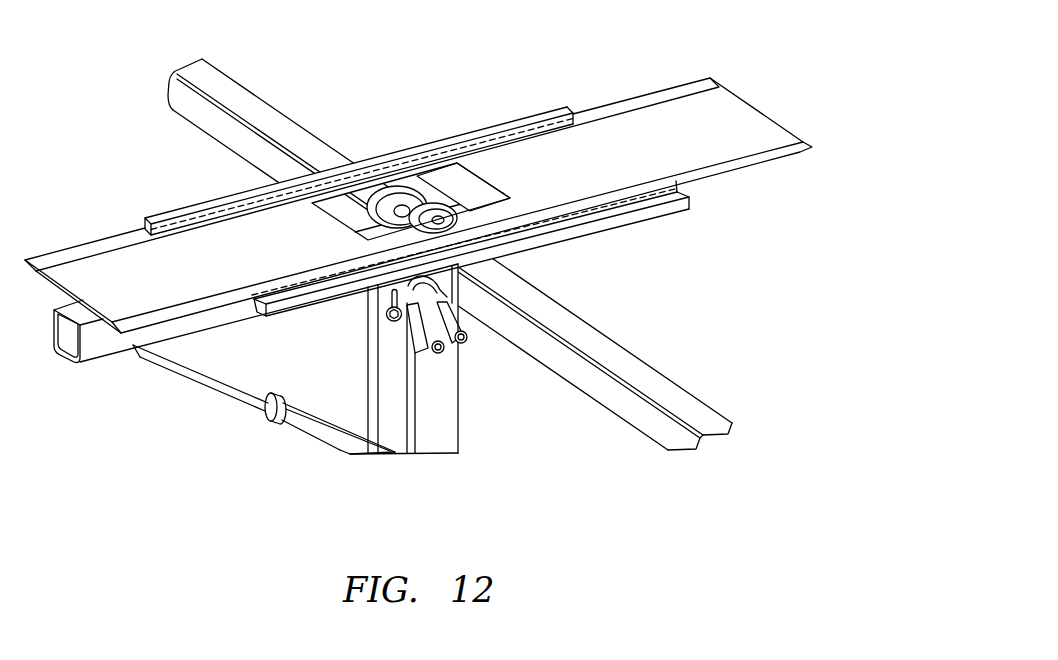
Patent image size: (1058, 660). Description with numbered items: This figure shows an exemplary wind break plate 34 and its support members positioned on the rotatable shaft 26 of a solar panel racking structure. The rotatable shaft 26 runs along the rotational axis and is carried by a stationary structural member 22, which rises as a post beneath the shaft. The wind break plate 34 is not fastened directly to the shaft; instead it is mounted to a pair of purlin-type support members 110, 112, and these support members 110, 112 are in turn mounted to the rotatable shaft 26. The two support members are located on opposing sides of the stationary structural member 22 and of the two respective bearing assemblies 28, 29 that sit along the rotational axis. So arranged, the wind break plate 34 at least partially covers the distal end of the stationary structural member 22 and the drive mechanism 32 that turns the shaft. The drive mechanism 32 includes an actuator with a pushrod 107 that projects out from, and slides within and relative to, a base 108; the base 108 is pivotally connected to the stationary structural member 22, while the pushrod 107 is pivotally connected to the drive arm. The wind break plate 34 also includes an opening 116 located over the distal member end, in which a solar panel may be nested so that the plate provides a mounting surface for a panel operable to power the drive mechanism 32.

The stationary structural member 22 is at (450, 432).
The rotatable shaft 26 is at (668, 395).
The bearing assembly 28 is at (393, 197).
The bearing assembly 29 is at (443, 226).
The drive mechanism 32 is at (212, 433).
The wind break plate 34 is at (718, 68).
The pushrod 107 is at (185, 370).
The base 108 is at (341, 442).
The support member 110 is at (517, 118).
The support member 112 is at (647, 213).
The opening 116 is at (453, 190).